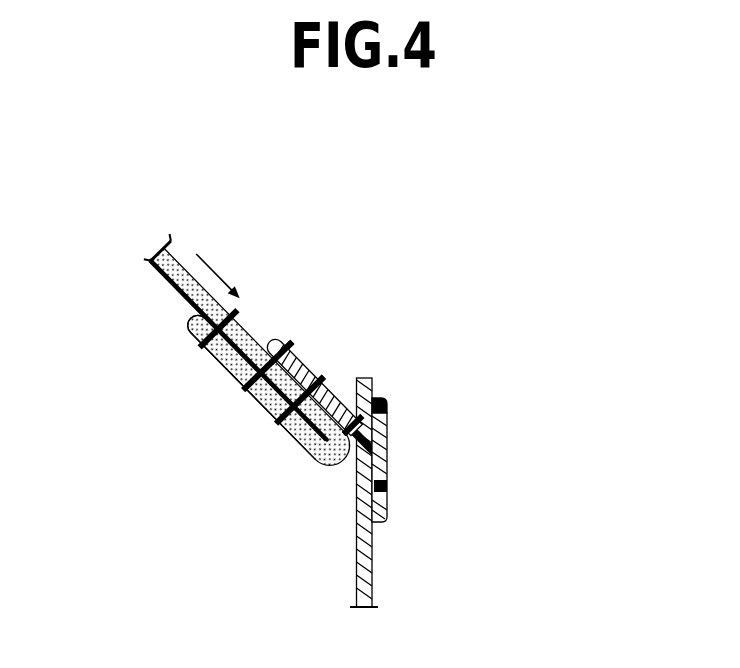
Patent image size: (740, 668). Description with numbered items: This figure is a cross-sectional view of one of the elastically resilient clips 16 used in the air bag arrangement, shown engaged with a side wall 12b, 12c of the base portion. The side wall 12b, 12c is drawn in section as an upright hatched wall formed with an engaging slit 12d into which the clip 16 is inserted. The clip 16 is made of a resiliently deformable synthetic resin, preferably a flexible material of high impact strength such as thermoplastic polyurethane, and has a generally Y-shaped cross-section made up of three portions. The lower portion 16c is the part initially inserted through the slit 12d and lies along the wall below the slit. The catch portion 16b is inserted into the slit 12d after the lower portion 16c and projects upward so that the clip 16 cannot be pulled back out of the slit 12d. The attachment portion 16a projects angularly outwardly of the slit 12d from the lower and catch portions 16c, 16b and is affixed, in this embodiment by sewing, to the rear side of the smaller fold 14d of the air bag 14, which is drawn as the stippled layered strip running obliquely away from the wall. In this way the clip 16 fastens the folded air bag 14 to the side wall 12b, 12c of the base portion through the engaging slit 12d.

The air bag 14 is at (223, 312).
The smaller folds of the air bag 14d is at (193, 308).
The clip 16 is at (400, 380).
The attachment portion 16a is at (300, 372).
The catch portion 16b is at (384, 405).
The lower portion 16c is at (380, 490).
The side wall 12b is at (471, 492).
The side wall 12c is at (362, 580).
The engaging slit 12d is at (352, 460).